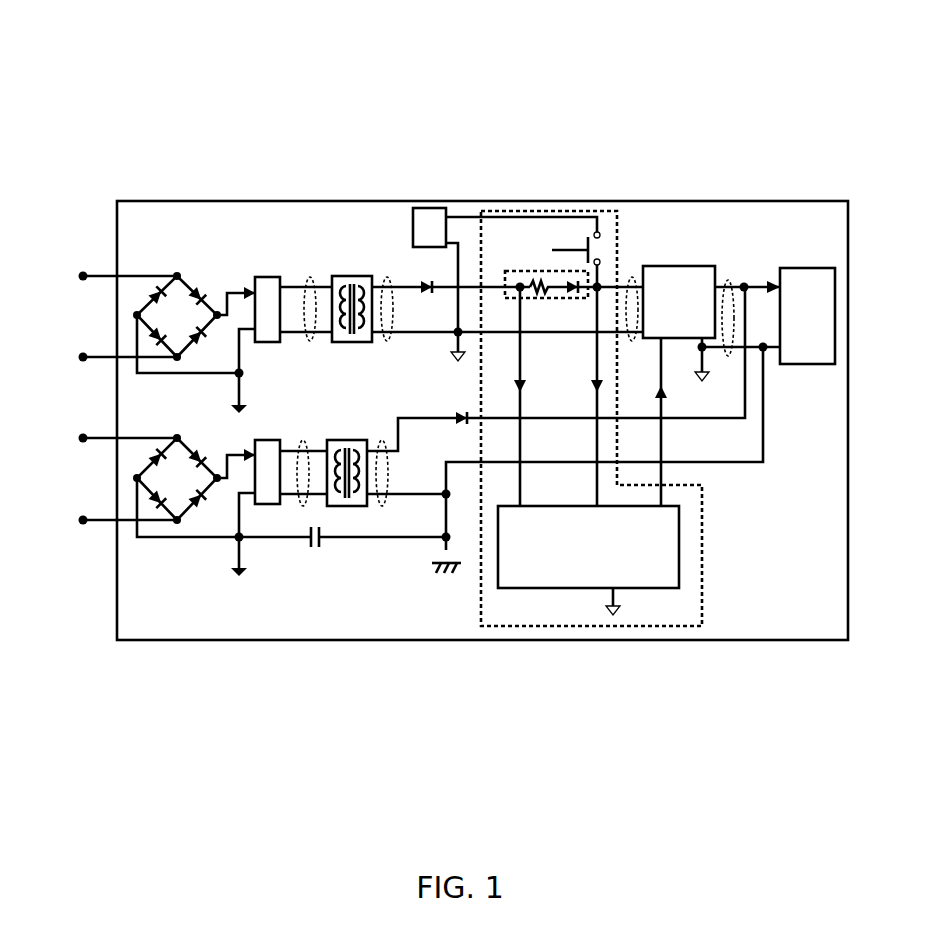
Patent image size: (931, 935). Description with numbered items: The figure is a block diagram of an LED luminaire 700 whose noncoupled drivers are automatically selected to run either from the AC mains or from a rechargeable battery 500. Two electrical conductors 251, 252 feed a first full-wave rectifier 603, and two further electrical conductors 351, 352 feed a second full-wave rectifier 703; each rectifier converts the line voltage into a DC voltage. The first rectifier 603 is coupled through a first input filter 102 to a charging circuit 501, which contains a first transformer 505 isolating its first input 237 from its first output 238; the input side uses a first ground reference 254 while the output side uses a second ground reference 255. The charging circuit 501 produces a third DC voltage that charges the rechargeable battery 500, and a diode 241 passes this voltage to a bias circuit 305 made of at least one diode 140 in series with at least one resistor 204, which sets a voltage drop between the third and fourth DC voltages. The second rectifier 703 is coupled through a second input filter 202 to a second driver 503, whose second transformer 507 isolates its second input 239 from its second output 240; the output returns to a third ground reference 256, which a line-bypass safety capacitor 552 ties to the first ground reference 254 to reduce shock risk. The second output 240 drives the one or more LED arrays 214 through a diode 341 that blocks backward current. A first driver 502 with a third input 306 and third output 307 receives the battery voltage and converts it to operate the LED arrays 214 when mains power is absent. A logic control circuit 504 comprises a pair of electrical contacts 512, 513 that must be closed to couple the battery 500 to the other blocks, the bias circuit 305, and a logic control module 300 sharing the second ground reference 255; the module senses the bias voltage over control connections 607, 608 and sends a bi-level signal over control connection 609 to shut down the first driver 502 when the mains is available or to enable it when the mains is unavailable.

The LED luminaire 700 is at (464, 190).
The rechargeable battery 500 is at (422, 208).
The first driver 502 is at (677, 256).
The first full-wave rectifier 603 is at (170, 262).
The first input 237 is at (310, 276).
The first input filter 102 is at (266, 277).
The charging circuit 501 is at (338, 262).
The diode 241 is at (425, 283).
The resistor 204 is at (515, 220).
The bias circuit 305 is at (550, 258).
The electrical contact 512 is at (600, 233).
The electrical contact 513 is at (600, 260).
The third output 307 is at (729, 280).
The third input 306 is at (632, 280).
The electrical conductor 251 is at (81, 271).
The electrical conductor 252 is at (82, 362).
The first ground reference 254 is at (232, 408).
The second input filter 202 is at (272, 438).
The first transformer 505 is at (350, 343).
The first output 238 is at (394, 309).
The second ground reference 255 is at (455, 358).
The diode 341 is at (462, 412).
The control connection 607 is at (518, 432).
The diode 140 is at (573, 292).
The control connection 608 is at (597, 428).
The control connection 609 is at (663, 400).
The LED array 214 is at (799, 366).
The electrical conductor 351 is at (80, 443).
The electrical conductor 352 is at (82, 525).
The second output 240 is at (388, 475).
The second input 239 is at (300, 502).
The second transformer 507 is at (350, 506).
The second driver 503 is at (371, 518).
The line-bypass safety capacitor 552 is at (311, 549).
The second full-wave rectifier 703 is at (181, 538).
The third ground reference 256 is at (446, 574).
The logic control module 300 is at (516, 602).
The logic control circuit 504 is at (712, 636).